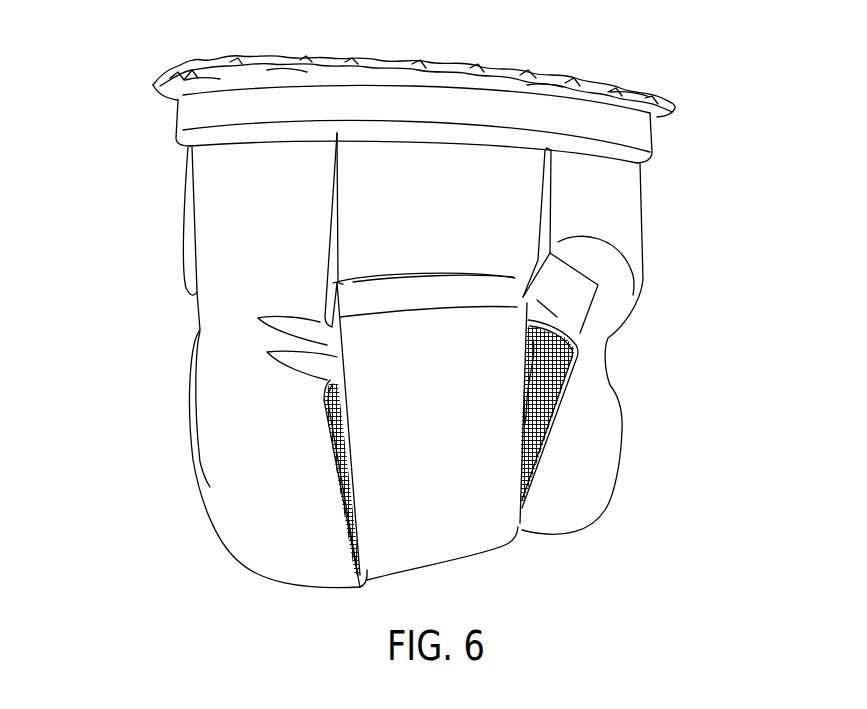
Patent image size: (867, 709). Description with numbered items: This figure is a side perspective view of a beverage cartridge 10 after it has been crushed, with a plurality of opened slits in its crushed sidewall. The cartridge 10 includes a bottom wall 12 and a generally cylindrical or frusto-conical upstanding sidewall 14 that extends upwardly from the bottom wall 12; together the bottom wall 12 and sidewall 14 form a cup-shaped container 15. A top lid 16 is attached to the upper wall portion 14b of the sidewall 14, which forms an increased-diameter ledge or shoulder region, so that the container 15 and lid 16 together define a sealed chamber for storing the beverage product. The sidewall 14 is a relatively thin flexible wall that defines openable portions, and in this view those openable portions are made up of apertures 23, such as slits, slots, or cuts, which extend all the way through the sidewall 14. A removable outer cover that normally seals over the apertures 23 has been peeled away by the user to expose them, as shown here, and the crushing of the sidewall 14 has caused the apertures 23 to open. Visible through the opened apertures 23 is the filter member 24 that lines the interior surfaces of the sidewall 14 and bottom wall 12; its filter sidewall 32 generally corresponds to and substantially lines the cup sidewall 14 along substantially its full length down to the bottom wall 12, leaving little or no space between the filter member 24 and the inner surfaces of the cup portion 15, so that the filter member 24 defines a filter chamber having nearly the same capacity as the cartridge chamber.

The beverage cartridge 10 is at (713, 53).
The bottom wall 12 is at (462, 562).
The sidewall 14 is at (633, 273).
The upper wall portion 14b is at (688, 135).
The cup-shaped container 15 is at (142, 298).
The top lid 16 is at (552, 72).
The apertures 23 is at (185, 218).
The filter member 24 is at (502, 443).
The filter sidewall 32 is at (540, 420).